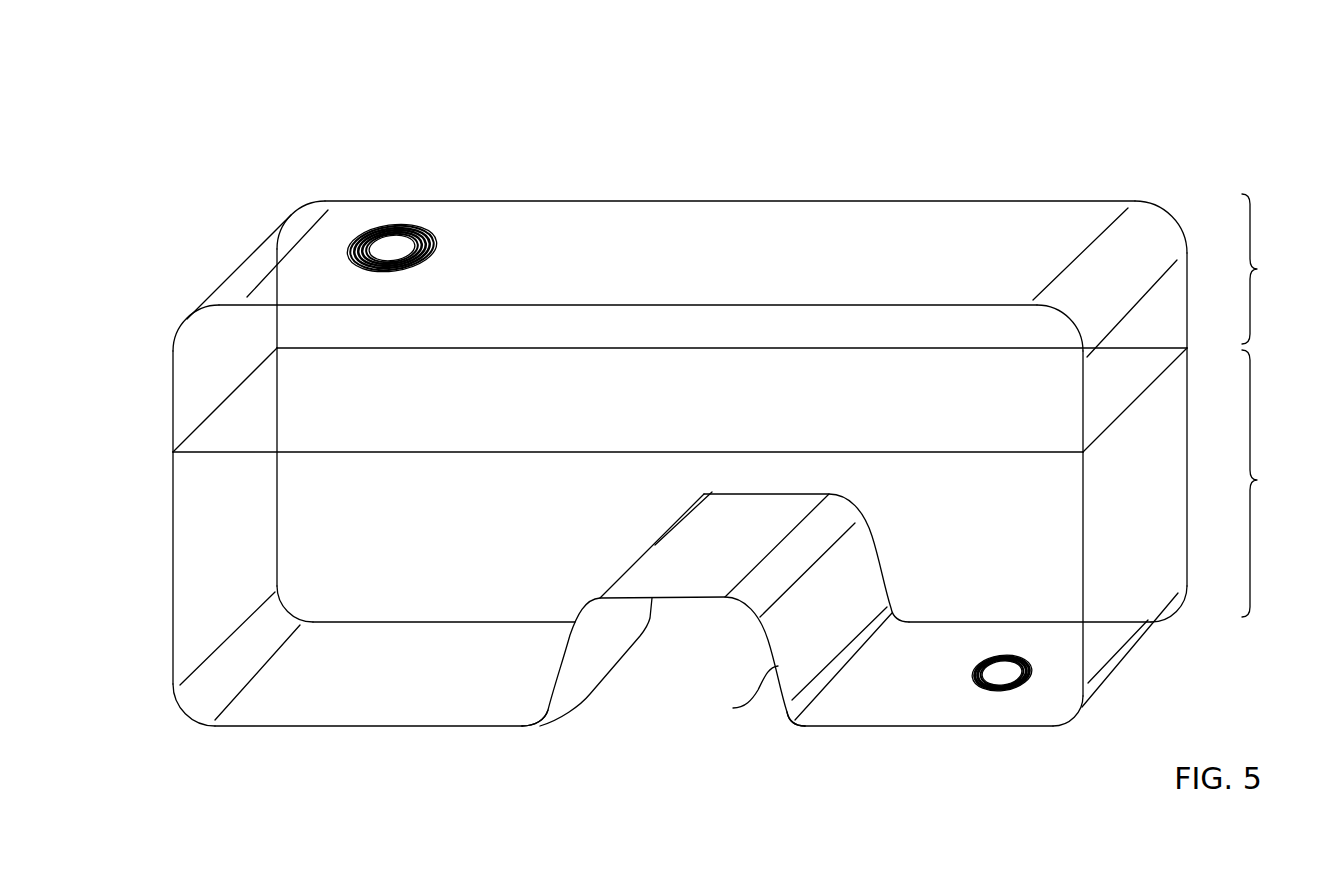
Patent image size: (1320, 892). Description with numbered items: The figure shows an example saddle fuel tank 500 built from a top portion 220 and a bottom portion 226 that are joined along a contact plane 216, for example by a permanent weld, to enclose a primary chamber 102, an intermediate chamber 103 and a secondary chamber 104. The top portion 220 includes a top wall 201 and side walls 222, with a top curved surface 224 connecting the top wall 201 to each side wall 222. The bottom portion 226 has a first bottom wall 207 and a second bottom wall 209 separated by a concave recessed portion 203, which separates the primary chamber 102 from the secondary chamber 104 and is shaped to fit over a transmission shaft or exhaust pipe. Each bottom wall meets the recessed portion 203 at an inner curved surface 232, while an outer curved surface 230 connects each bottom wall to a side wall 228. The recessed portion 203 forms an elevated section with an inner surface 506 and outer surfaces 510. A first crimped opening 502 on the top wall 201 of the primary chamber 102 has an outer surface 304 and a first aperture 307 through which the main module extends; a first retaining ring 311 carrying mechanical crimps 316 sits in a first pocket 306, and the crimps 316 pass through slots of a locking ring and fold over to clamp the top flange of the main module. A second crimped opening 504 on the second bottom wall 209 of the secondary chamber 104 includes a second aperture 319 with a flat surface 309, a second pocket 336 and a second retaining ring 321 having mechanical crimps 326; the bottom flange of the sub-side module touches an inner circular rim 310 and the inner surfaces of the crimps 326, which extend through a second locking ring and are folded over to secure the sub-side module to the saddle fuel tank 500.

The saddle fuel tank 500 is at (198, 96).
The first crimped opening 502 is at (404, 176).
The second crimped opening 504 is at (972, 628).
The top wall 201 is at (779, 222).
The recessed portion 203 is at (682, 736).
The first bottom wall 207 is at (406, 692).
The second bottom wall 209 is at (930, 692).
The contact plane 216 is at (505, 448).
The top portion 220 is at (1242, 271).
The side wall 222 is at (172, 410).
The top curved surface 224 is at (280, 201).
The bottom portion 226 is at (1241, 482).
The side wall 228 is at (172, 558).
The outer curved surface 230 is at (185, 747).
The inner curved surface 232 is at (546, 738).
The primary chamber 102 is at (412, 536).
The intermediate chamber 103 is at (737, 479).
The secondary chamber 104 is at (947, 532).
The inner surface 506 is at (667, 556).
The outer surfaces 510 is at (590, 653).
The outer surface 304 is at (437, 248).
The first pocket 306 is at (355, 235).
The first aperture 307 is at (402, 251).
The first retaining ring 311 is at (423, 228).
The mechanical crimps 316 is at (388, 271).
The flat surface 309 is at (999, 676).
The inner circular rim 310 is at (1032, 673).
The second aperture 319 is at (987, 661).
The second retaining ring 321 is at (1011, 689).
The mechanical crimps 326 is at (987, 692).
The second pocket 336 is at (984, 674).